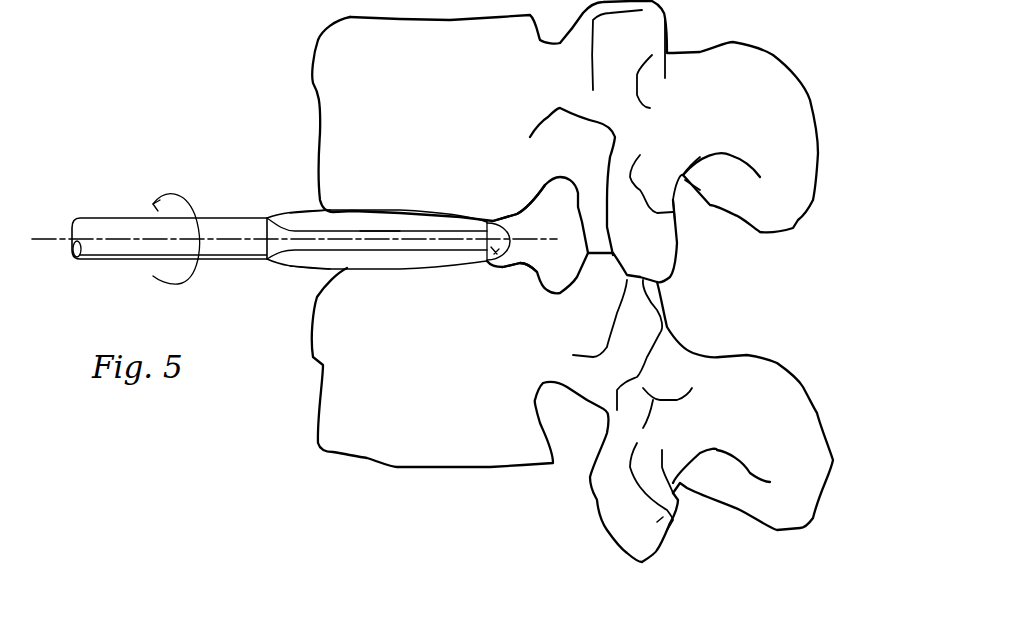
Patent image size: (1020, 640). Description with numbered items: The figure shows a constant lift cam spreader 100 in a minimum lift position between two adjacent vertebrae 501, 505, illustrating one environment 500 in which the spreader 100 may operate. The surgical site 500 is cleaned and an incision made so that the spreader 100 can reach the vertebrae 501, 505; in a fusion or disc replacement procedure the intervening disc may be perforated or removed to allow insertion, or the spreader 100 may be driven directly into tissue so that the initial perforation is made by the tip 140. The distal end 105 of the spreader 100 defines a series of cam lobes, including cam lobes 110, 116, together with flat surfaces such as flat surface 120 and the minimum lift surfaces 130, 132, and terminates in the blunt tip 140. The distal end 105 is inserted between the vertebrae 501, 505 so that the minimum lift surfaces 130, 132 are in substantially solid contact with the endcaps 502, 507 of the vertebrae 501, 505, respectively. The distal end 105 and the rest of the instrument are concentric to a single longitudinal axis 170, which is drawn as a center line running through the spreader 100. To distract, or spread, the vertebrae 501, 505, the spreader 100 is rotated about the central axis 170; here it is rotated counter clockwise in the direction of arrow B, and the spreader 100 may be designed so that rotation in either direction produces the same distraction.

The constant lift cam spreader 100 is at (98, 181).
The longitudinal axis 170 is at (44, 237).
The distal end 105 is at (375, 282).
The cam lobe 110 is at (290, 222).
The cam lobe 116 is at (290, 255).
The minimum lift surface 130 is at (318, 215).
The minimum lift surface 132 is at (293, 268).
The flat surface 120 is at (378, 230).
The blunt tip 140 is at (490, 268).
The environment 500 is at (813, 61).
The vertebra 501 is at (463, 125).
The endcap 502 is at (523, 219).
The vertebra 505 is at (463, 391).
The endcap 507 is at (520, 265).